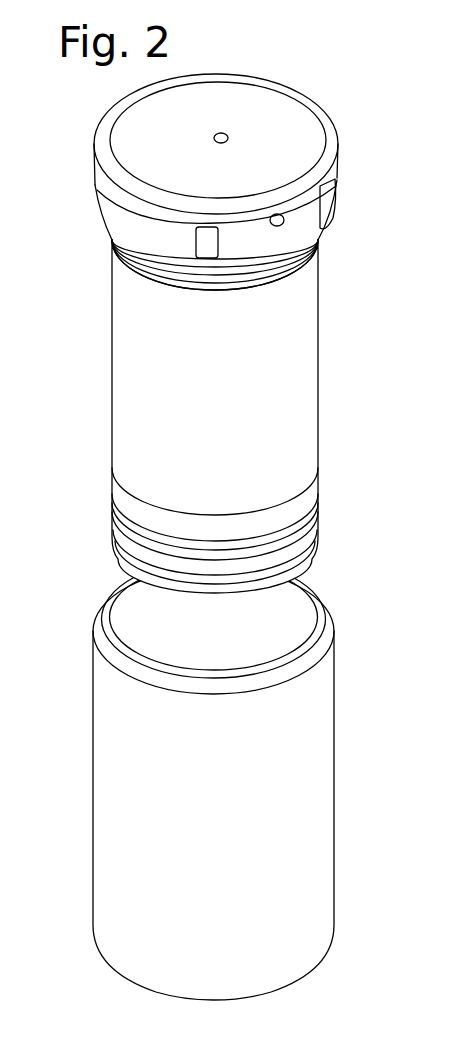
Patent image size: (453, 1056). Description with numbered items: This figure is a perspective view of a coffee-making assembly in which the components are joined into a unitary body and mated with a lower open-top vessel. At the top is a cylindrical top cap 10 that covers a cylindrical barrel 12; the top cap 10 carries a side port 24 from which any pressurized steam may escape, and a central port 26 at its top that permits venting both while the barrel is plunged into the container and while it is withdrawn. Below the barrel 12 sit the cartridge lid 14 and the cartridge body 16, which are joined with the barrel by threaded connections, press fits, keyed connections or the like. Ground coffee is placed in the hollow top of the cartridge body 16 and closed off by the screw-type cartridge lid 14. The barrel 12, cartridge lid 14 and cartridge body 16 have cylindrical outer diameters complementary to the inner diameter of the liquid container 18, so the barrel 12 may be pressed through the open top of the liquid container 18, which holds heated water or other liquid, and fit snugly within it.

The cylindrical top cap 10 is at (295, 115).
The cylindrical barrel 12 is at (313, 265).
The cartridge lid 14 is at (303, 497).
The cartridge body 16 is at (120, 537).
The liquid container 18 is at (307, 738).
The side port 24 is at (284, 218).
The central port 26 is at (227, 134).